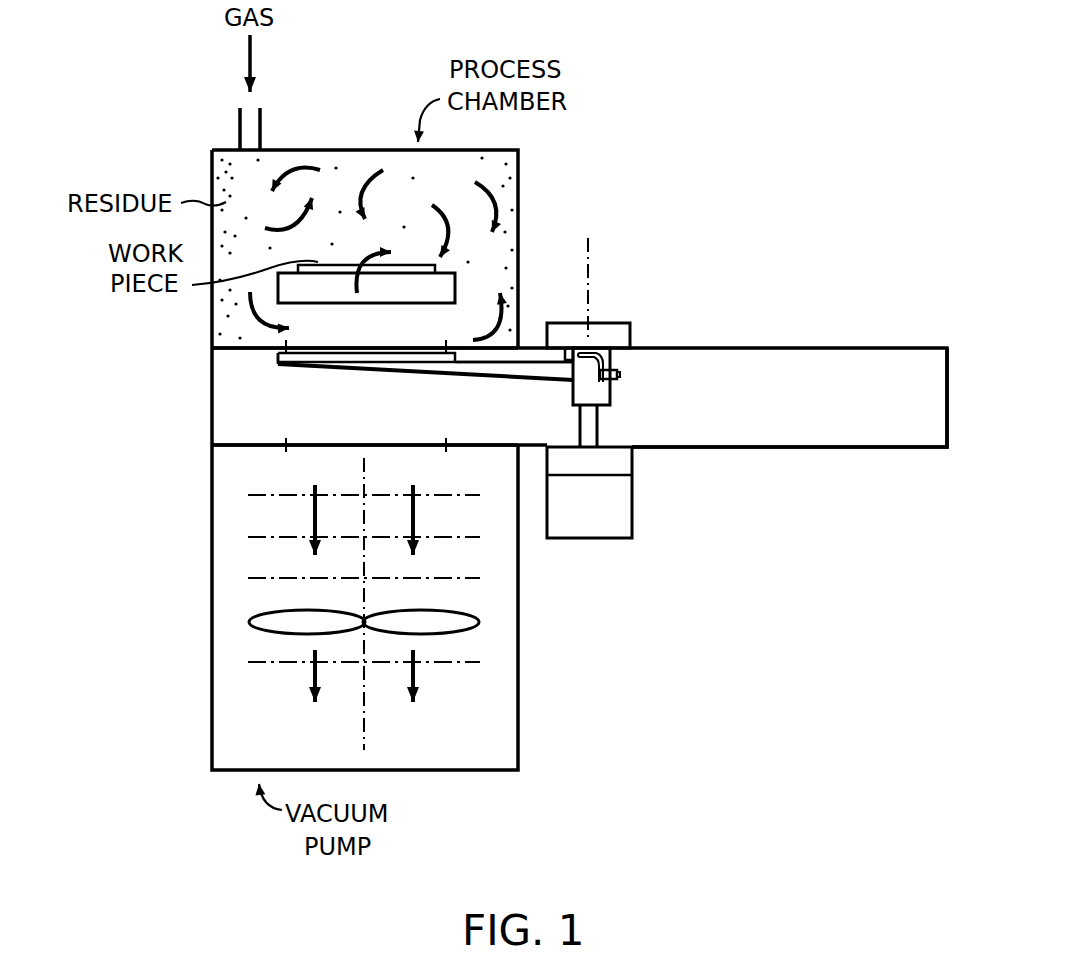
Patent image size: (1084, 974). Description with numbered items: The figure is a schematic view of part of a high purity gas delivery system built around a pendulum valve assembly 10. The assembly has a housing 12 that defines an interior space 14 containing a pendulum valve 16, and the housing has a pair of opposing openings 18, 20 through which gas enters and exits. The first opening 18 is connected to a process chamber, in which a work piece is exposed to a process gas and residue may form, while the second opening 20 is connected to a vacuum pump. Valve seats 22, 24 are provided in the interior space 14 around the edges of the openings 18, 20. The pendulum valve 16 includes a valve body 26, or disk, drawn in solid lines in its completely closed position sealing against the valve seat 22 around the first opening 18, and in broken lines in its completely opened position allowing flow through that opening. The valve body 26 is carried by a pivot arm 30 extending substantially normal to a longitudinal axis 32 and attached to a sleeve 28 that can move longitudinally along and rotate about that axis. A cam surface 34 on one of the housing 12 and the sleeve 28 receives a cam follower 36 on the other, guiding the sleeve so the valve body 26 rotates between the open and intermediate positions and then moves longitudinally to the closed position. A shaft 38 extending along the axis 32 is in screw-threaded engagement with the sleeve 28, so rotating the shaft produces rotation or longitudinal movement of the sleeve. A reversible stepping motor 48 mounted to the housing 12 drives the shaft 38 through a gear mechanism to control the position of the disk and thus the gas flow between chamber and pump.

The pendulum valve assembly 10 is at (800, 300).
The housing 12 is at (833, 449).
The interior space 14 is at (368, 409).
The pendulum valve 16 is at (416, 378).
The first opening 18 is at (288, 345).
The second opening 20 is at (288, 445).
The valve seat 22 is at (444, 345).
The valve seat 24 is at (444, 445).
The valve body 26 is at (285, 365).
The sleeve 28 is at (566, 352).
The pivot arm 30 is at (500, 372).
The longitudinal axis 32 is at (592, 243).
The cam surface 34 is at (598, 345).
The cam follower 36 is at (620, 372).
The shaft 38 is at (599, 419).
The motor 48 is at (612, 509).